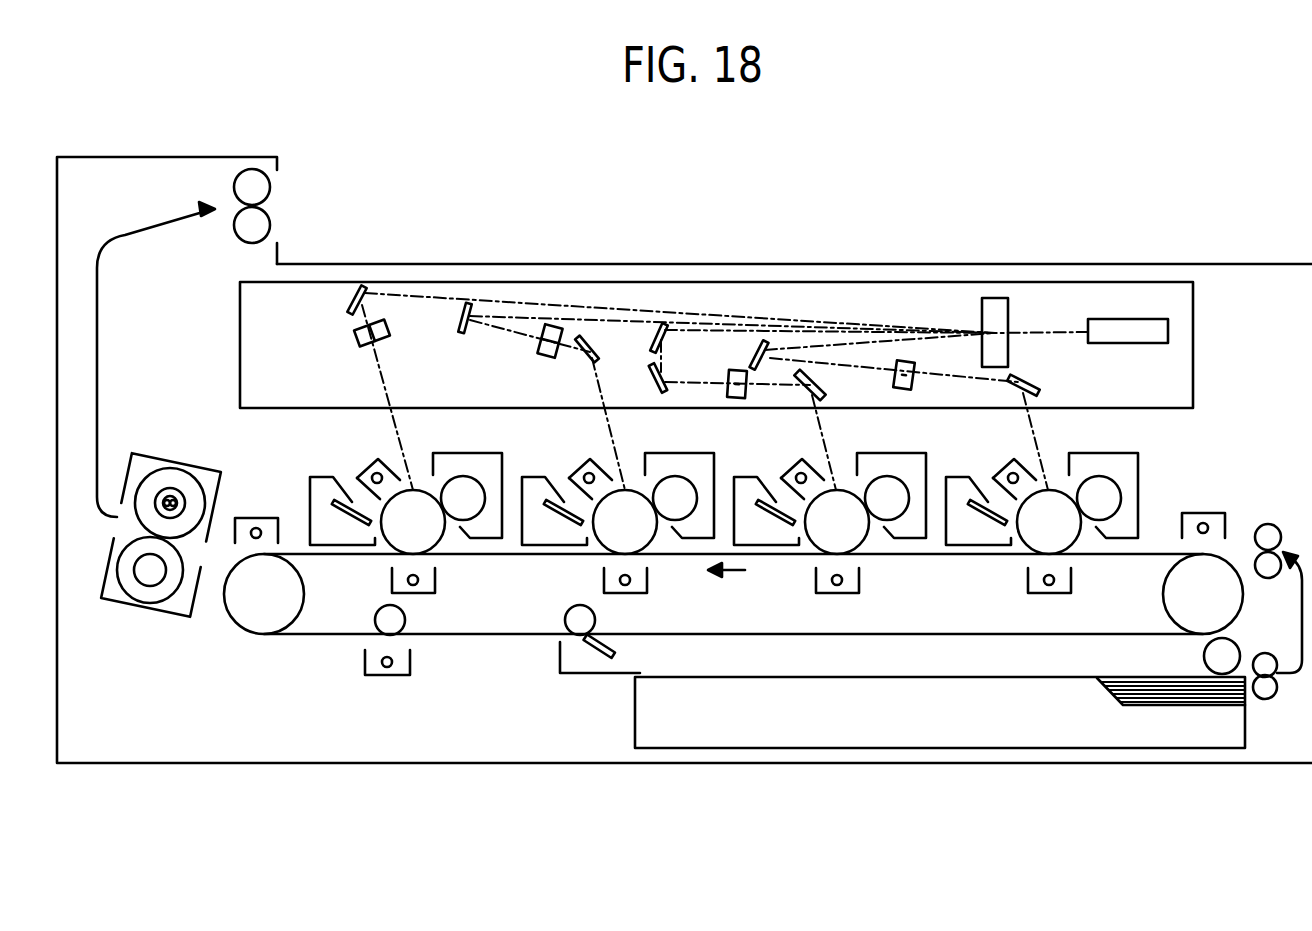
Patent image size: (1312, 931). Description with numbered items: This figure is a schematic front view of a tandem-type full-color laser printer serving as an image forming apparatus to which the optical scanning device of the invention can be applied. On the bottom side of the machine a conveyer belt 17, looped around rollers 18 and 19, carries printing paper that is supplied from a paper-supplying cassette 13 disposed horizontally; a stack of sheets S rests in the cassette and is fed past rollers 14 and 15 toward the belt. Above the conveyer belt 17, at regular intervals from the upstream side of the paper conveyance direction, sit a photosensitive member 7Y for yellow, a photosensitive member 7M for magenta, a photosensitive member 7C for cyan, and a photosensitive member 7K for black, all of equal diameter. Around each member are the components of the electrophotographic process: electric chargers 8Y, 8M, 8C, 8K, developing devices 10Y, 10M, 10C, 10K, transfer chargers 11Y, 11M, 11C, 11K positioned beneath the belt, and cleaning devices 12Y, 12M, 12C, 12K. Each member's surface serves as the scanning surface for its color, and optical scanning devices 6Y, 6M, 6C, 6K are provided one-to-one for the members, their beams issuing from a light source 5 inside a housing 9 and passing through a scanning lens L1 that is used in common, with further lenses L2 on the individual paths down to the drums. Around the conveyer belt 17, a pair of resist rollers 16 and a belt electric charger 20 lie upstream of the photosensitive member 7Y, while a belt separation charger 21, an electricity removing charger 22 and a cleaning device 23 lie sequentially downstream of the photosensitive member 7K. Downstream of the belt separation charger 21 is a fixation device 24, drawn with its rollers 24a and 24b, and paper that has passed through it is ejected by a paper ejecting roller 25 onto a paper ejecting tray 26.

The light source 5 is at (1168, 334).
The optical scanning unit 9 is at (240, 345).
The scanning lens L1 is at (1010, 320).
The second lens L2 is at (355, 336).
The optical scanning device 6K is at (360, 394).
The optical scanning device 6C is at (478, 366).
The optical scanning device 6M is at (828, 376).
The optical scanning device 6Y is at (1050, 392).
The photosensitive member for black 7K is at (423, 498).
The photosensitive member for cyan 7C is at (635, 498).
The photosensitive member for magenta 7M is at (847, 498).
The photosensitive member for yellow 7Y is at (1059, 498).
The electric charger 8K is at (372, 461).
The electric charger 8C is at (584, 461).
The electric charger 8M is at (796, 461).
The electric charger 8Y is at (1008, 461).
The developing device 10K is at (482, 453).
The developing device 10C is at (694, 453).
The developing device 10M is at (906, 453).
The developing device 10Y is at (1118, 453).
The transfer charger 11K is at (437, 588).
The transfer charger 11C is at (649, 588).
The transfer charger 11M is at (861, 588).
The transfer charger 11Y is at (1073, 588).
The cleaning device 12K is at (340, 545).
The cleaning device 12C is at (552, 545).
The cleaning device 12M is at (764, 545).
The cleaning device 12Y is at (976, 545).
The paper-supplying cassette 13 is at (635, 728).
The pickup roller 14 is at (1204, 652).
The feed roller pair 15 is at (1270, 654).
The pair of resist rollers 16 is at (1273, 523).
The conveyer belt 17 is at (825, 634).
The belt drive roller 18 is at (300, 612).
The belt tension roller 19 is at (1166, 602).
The belt electric charger 20 is at (1207, 513).
The belt separation charger 21 is at (256, 518).
The electricity removing charger 22 is at (393, 677).
The cleaning device 23 is at (575, 675).
The fixation device 24 is at (178, 620).
The heat roller 24a is at (172, 478).
The pressure roller 24b is at (135, 600).
The paper ejecting roller 25 is at (283, 187).
The paper ejecting tray 26 is at (795, 264).
The sheet S is at (1140, 678).